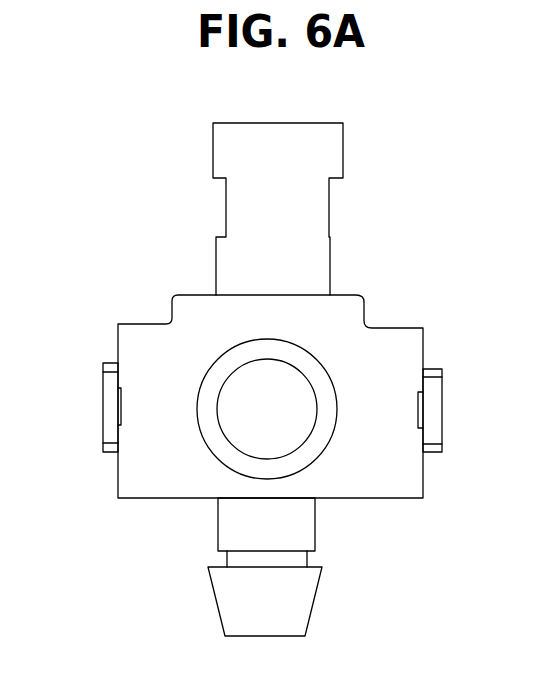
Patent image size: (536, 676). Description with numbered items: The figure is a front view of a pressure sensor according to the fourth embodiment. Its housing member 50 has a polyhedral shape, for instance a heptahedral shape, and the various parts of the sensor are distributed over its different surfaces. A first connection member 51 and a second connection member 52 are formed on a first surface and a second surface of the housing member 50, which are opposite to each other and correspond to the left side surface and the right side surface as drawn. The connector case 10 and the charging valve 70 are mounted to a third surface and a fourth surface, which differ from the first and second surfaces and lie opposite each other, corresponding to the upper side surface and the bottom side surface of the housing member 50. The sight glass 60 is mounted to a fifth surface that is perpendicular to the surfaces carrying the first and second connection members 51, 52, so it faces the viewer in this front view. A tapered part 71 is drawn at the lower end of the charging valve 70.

The connector case 10 is at (317, 213).
The housing member 50 is at (388, 327).
The first connection member 51 is at (108, 363).
The second connection member 52 is at (442, 369).
The sight glass 60 is at (333, 382).
The charging valve 70 is at (315, 522).
The tapered plug 71 is at (317, 607).